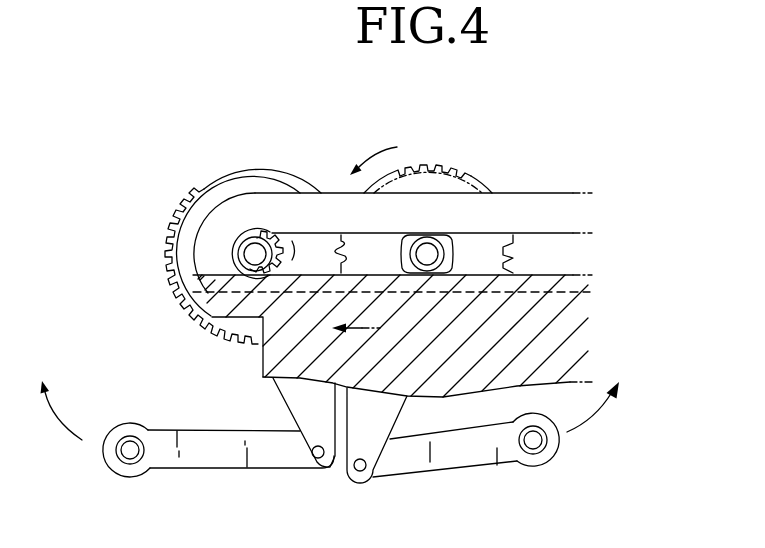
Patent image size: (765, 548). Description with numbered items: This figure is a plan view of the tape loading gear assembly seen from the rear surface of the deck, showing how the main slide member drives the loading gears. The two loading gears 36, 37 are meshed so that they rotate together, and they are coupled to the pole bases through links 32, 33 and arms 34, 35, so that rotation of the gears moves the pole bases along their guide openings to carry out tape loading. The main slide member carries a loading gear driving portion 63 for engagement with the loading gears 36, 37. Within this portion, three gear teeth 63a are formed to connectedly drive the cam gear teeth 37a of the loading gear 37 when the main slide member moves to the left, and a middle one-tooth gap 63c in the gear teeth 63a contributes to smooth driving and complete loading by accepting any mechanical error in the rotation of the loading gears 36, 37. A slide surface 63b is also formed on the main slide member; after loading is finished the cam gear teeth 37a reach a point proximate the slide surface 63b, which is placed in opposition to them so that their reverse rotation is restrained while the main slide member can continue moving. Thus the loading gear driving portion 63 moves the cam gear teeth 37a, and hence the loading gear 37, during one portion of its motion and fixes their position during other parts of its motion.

The link 32 is at (486, 463).
The link 33 is at (177, 470).
The arm 34 is at (385, 422).
The arm 35 is at (292, 410).
The loading gear 36 is at (477, 180).
The loading gear 37 is at (222, 173).
The cam gear teeth 37a is at (272, 228).
The loading gear driving portion 63 is at (548, 198).
The gear teeth 63a is at (195, 311).
The slide surface 63b is at (567, 275).
The middle one-tooth gap 63c is at (338, 237).